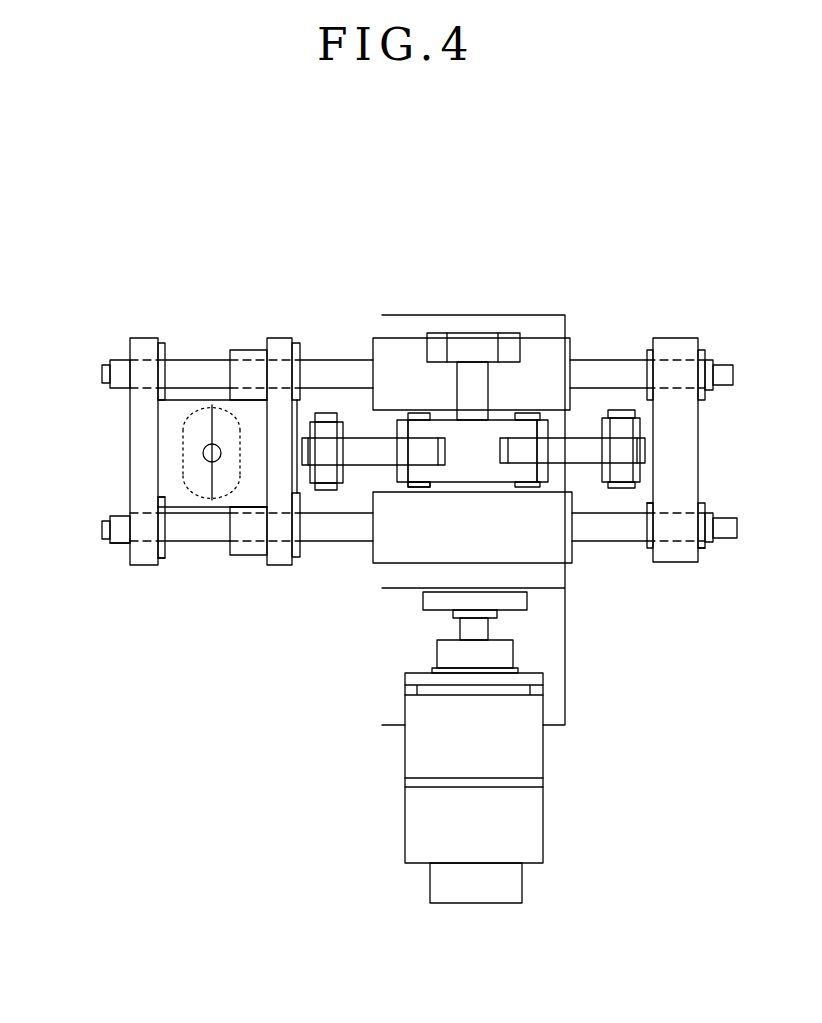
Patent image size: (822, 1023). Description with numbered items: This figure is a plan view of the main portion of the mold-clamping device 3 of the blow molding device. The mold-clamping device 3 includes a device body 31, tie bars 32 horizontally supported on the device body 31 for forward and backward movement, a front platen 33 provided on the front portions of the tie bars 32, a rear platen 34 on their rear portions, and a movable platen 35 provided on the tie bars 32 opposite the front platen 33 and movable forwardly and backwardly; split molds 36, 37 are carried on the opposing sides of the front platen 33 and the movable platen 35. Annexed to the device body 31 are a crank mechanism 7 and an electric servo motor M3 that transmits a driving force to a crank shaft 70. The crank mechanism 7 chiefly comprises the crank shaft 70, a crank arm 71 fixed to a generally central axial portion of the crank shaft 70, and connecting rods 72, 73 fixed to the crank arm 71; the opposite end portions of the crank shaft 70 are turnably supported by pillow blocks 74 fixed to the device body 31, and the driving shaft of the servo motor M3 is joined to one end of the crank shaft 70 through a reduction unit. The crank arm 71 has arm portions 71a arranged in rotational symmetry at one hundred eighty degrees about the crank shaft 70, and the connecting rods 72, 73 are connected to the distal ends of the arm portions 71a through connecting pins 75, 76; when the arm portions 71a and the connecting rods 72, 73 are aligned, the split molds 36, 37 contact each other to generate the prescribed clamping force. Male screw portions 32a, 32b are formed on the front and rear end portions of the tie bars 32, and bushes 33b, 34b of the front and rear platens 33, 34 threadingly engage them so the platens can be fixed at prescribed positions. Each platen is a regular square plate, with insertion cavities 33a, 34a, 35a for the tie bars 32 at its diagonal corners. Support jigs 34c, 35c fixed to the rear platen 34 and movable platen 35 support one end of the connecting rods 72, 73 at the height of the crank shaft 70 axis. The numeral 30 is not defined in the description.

The mold-clamping device 3 is at (436, 244).
The device body 31 is at (553, 344).
The tie bars 32 is at (200, 347).
The male screw portion 32a is at (98, 365).
The male screw portion 32b is at (735, 362).
The front platen 33 is at (131, 330).
The insertion cavity 33a is at (148, 538).
The bush 33b is at (157, 563).
The rear platen 34 is at (691, 335).
The insertion cavity 34a is at (683, 503).
The bush 34b is at (705, 550).
The support jig 34c is at (622, 410).
The movable platen 35 is at (276, 327).
The insertion cavity 35a is at (263, 345).
The support jig 35c is at (305, 418).
The split mold 36 is at (164, 490).
The split mold 37 is at (257, 497).
The slot 30 is at (172, 433).
The crank shaft 70 is at (470, 382).
The crank arm 71 is at (492, 422).
The arm portions 71a is at (417, 408).
The connecting rod 72 is at (357, 448).
The connecting rod 73 is at (582, 461).
The pillow blocks 74 is at (460, 342).
The connecting pin 75 is at (422, 487).
The connecting pin 76 is at (530, 493).
The crank mechanism 7 is at (470, 466).
The servo motor M3 is at (494, 731).